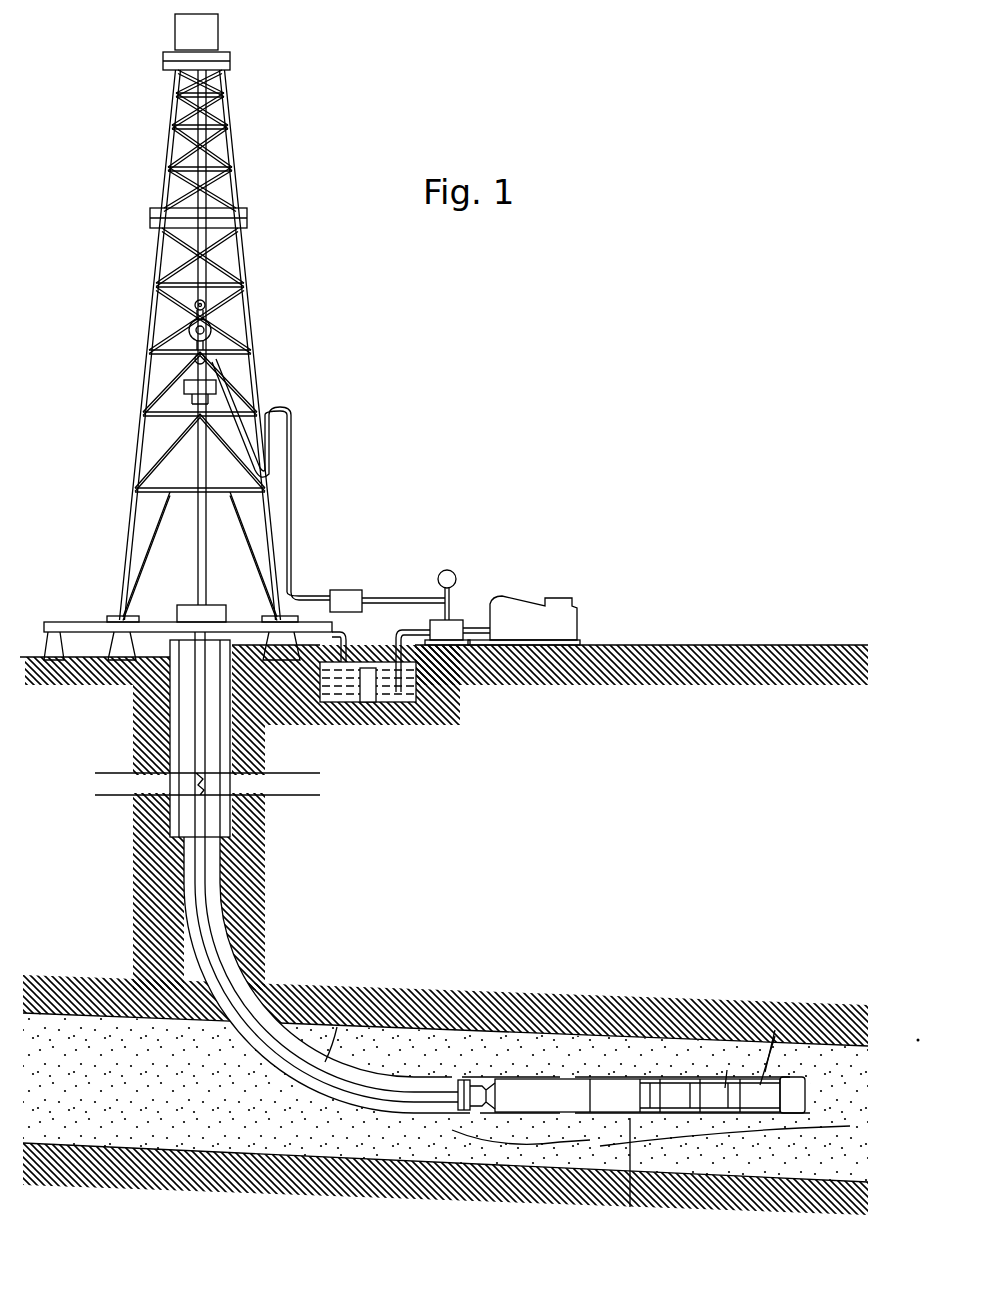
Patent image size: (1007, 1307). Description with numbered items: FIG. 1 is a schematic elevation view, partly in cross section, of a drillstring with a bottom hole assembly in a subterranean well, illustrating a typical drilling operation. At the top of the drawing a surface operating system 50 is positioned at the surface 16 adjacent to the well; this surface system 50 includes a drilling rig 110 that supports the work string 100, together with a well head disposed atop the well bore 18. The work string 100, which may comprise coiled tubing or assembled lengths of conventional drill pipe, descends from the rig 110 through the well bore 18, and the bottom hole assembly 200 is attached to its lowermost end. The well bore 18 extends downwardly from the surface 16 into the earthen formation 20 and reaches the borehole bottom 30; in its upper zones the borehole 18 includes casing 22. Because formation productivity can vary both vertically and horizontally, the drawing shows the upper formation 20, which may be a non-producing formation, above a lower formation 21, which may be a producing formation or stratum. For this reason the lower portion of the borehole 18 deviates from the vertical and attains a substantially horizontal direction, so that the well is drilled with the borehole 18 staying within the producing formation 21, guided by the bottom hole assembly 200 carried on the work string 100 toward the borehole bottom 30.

The surface operating system 50 is at (273, 337).
The drilling rig / derrick 110 is at (197, 554).
The surface 16 is at (660, 645).
The casing 22 is at (170, 750).
The well bore 18 is at (217, 862).
The work string 100 is at (212, 930).
The earthen formation 20 is at (590, 869).
The producing formation 21 is at (206, 1105).
The borehole bottom 30 is at (805, 1100).
The bottom hole assembly 200 is at (630, 1207).